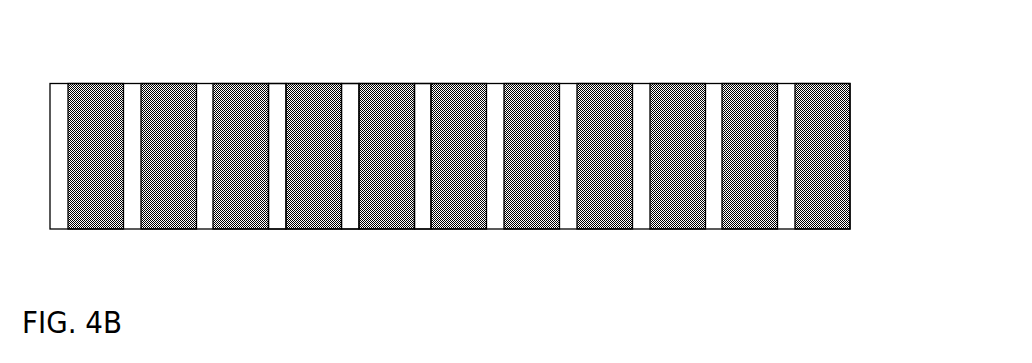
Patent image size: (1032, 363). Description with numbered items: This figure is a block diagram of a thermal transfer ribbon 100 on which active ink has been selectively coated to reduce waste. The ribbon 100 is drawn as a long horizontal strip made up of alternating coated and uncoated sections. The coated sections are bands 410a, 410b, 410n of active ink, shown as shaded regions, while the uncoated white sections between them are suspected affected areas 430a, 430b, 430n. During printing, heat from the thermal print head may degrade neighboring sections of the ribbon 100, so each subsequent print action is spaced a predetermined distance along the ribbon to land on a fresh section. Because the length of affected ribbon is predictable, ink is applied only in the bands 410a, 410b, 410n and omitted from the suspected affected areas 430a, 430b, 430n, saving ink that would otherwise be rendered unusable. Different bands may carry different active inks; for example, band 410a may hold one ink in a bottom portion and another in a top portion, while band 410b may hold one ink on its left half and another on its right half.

The ribbon 100 is at (450, 142).
The band 410a is at (204, 181).
The band 410b is at (347, 133).
The band 410n is at (419, 181).
The suspected affected area 430a is at (239, 133).
The suspected affected area 430b is at (308, 181).
The suspected affected area 430n is at (464, 133).